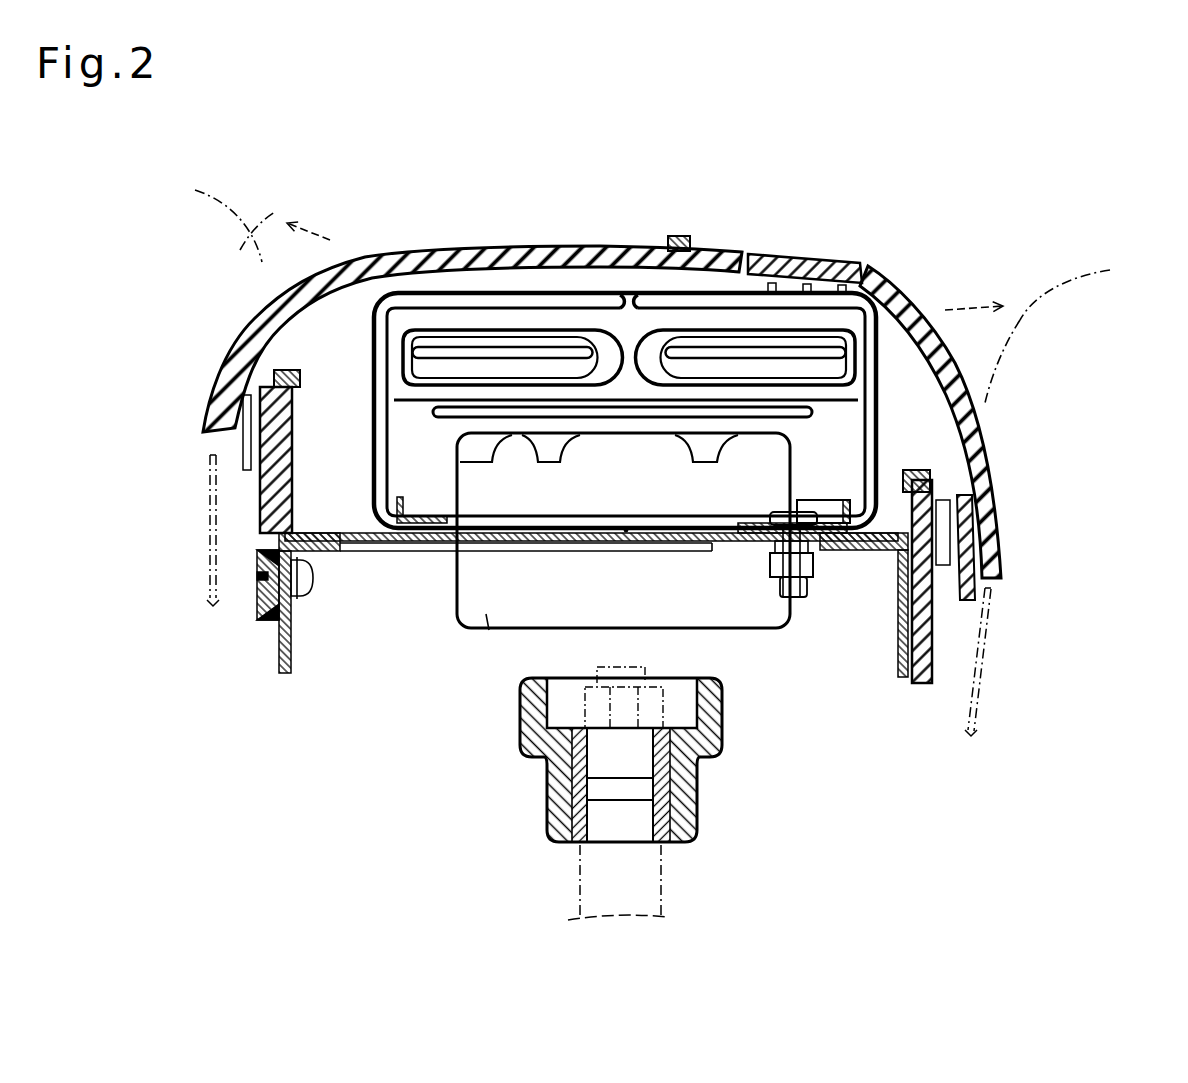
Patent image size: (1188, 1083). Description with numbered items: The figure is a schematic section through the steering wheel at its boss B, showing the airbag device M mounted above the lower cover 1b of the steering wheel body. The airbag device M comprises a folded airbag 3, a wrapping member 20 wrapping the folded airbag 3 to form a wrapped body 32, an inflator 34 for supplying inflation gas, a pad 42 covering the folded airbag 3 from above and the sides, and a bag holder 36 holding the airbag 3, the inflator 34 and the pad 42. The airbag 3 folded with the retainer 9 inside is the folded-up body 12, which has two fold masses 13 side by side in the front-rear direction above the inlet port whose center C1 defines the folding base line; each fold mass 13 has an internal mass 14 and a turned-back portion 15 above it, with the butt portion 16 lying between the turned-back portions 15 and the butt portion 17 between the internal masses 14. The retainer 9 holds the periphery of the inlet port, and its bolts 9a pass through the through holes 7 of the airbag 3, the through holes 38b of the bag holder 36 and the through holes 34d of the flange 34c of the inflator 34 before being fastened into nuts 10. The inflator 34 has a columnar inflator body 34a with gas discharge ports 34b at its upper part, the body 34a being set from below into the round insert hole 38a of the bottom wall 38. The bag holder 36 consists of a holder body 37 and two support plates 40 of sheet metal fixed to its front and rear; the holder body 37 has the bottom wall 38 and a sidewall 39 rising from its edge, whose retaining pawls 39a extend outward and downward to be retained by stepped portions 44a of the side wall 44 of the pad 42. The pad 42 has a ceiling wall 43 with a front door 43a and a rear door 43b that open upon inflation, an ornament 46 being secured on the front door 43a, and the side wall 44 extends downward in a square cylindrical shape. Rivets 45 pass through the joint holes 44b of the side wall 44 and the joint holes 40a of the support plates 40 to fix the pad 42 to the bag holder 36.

The lower cover 1b is at (206, 527).
The airbag 3 is at (536, 424).
The through holes 7 is at (797, 548).
The retainer 9 is at (794, 566).
The bolts 9a is at (772, 555).
The nuts 10 is at (813, 563).
The folded-up body 12 is at (717, 314).
The fold masses 13 is at (629, 314).
The internal mass 14 is at (551, 333).
The turned-back portion 15 is at (495, 309).
The butt portion 16 is at (641, 266).
The butt portion 17 is at (629, 402).
The wrapping member 20 is at (710, 314).
The wrapped body 32 is at (884, 360).
The inflator 34 is at (619, 606).
The inflator body 34a is at (488, 623).
The gas discharge ports 34b is at (623, 456).
The flange 34c is at (710, 546).
The through holes 34d is at (765, 598).
The bag holder 36 is at (598, 679).
The holder body 37 is at (374, 553).
The bottom wall 38 is at (591, 551).
The insert hole 38a is at (445, 553).
The through holes 38b is at (798, 598).
The sidewall 39 is at (668, 410).
The retaining pawls 39a is at (291, 379).
The support plates 40 is at (406, 725).
The joint holes 40a is at (291, 579).
The pad 42 is at (489, 240).
The ceiling wall 43 is at (665, 347).
The front door 43a is at (889, 286).
The door 43b is at (300, 256).
The side wall 44 is at (595, 485).
The stepped portions 44a is at (247, 381).
The joint holes 44b is at (262, 575).
The rivets 45 is at (267, 595).
The ornament 46 is at (817, 256).
The boss B is at (521, 787).
The center C1 is at (626, 532).
The airbag device M is at (423, 731).